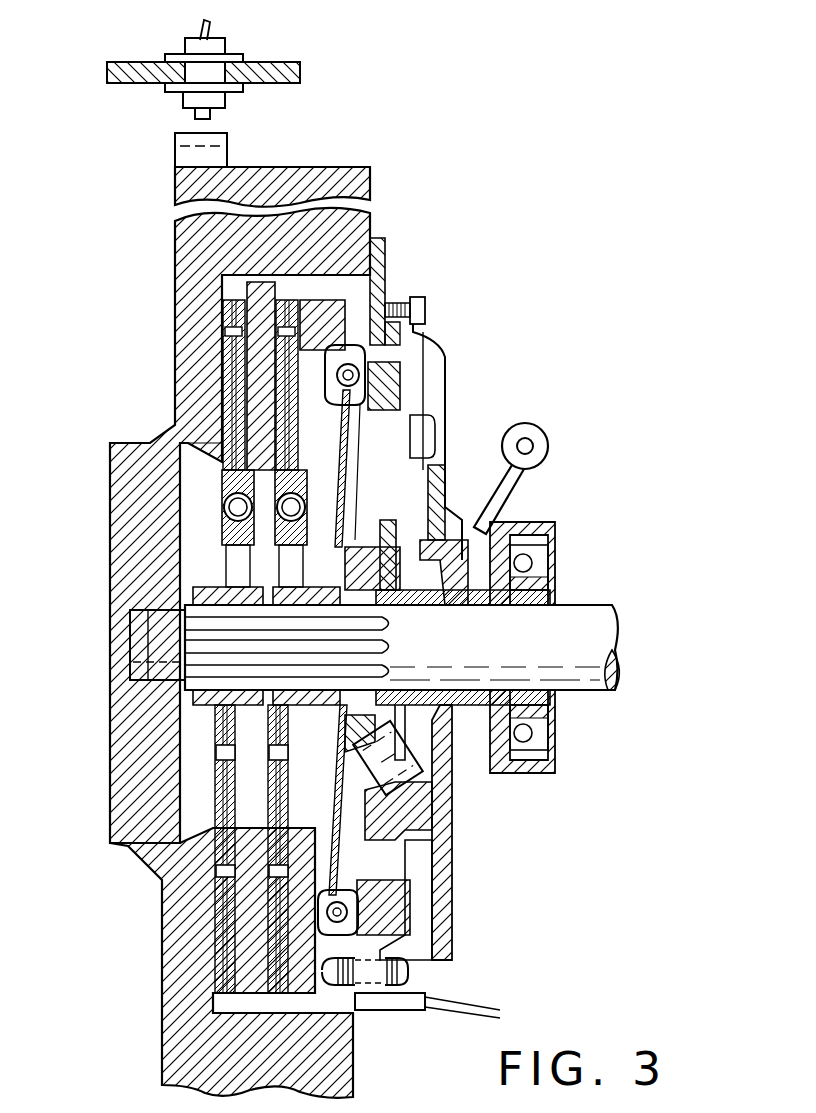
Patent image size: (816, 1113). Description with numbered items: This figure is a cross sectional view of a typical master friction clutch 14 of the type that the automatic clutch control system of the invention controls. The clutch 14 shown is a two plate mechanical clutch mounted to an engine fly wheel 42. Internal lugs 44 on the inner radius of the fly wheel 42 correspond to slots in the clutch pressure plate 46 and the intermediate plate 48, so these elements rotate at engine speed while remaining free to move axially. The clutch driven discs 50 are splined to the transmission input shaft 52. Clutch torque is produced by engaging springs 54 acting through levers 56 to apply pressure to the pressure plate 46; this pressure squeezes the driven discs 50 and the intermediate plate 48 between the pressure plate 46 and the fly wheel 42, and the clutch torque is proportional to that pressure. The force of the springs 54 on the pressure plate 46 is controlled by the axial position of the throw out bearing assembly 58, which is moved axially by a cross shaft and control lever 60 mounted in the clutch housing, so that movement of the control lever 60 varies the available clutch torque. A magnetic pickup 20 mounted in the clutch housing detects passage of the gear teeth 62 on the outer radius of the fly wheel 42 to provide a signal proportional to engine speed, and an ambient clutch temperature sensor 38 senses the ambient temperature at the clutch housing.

The master friction clutch 14 is at (416, 134).
The magnetic pickup 20 is at (158, 39).
The ambient clutch temperature sensor 38 is at (450, 1016).
The engine fly wheel 42 is at (385, 215).
The internal lugs 44 is at (289, 293).
The clutch pressure plate 46 is at (327, 327).
The intermediate plate 48 is at (225, 285).
The clutch driven discs 50 is at (268, 372).
The transmission input shaft 52 is at (584, 601).
The engaging springs 54 is at (450, 782).
The levers 56 is at (357, 452).
The throw out bearing assembly 58 is at (527, 779).
The control lever 60 is at (540, 420).
The gear teeth 62 is at (213, 143).